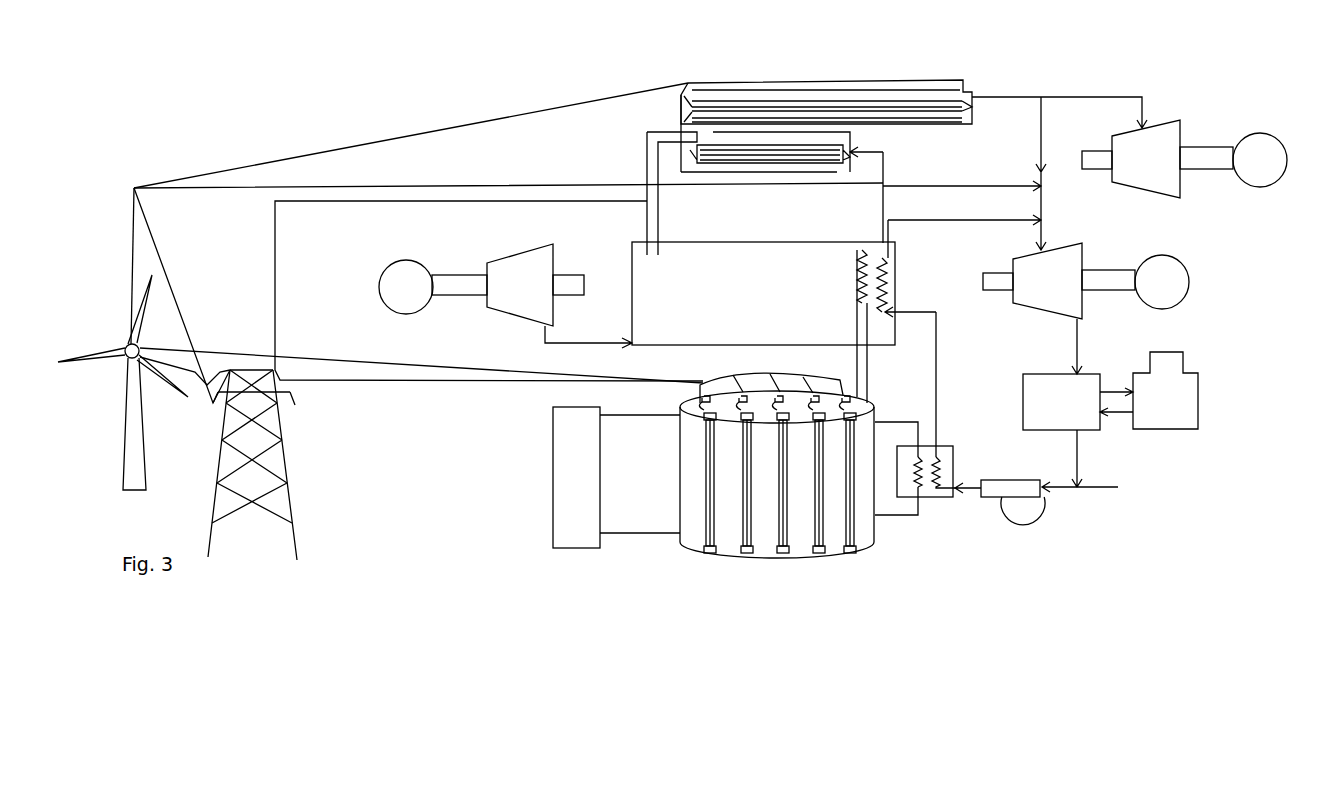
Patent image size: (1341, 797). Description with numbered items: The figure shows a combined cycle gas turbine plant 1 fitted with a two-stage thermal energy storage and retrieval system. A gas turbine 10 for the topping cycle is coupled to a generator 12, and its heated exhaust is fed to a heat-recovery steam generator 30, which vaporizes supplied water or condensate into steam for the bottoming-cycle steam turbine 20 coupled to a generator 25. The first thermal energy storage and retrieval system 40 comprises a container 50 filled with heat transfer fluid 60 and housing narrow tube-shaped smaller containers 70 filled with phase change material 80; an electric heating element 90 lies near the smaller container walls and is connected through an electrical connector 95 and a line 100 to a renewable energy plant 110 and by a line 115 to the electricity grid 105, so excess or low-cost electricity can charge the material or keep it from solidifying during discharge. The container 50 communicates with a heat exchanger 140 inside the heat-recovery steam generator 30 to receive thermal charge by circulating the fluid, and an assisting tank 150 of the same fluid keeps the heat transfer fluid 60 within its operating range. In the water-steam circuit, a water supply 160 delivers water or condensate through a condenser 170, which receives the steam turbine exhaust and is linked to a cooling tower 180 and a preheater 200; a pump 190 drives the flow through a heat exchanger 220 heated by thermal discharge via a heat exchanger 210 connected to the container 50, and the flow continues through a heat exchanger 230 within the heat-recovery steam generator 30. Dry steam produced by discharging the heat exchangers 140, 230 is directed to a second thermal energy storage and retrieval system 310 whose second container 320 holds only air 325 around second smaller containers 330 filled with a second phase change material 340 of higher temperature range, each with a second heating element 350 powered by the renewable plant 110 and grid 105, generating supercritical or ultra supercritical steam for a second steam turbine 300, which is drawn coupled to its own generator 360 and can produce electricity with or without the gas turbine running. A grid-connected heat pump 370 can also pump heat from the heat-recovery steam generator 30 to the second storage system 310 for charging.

The combined cycle gas turbine plant 1 is at (545, 70).
The gas turbine 10 is at (525, 250).
The generator 12 is at (400, 260).
The steam turbine 20 is at (1080, 243).
The generator 25 is at (1183, 258).
The heat-recovery steam generator 30 is at (698, 242).
The thermal energy storage and retrieval system 40 is at (723, 372).
The container 50 is at (678, 425).
The heat transfer fluid 60 is at (690, 447).
The smaller container 70 is at (700, 455).
The phase change material 80 is at (706, 470).
The electric heating element 90 is at (708, 522).
The electrical connector 95 is at (695, 394).
The line 100 is at (480, 365).
The electricity grid 105 is at (283, 400).
The renewable energy plant 110 is at (122, 375).
The line 115 is at (470, 383).
The heat exchanger 140 is at (862, 248).
The assisting tank 150 is at (553, 475).
The water supply 160 is at (1105, 487).
The condenser 170 is at (1037, 374).
The cooling tower 180 is at (1175, 352).
The pump 190 is at (990, 480).
The preheater 200 is at (938, 497).
The heat exchanger 210 is at (913, 458).
The heat exchanger 220 is at (945, 457).
The heat exchanger 230 is at (892, 280).
The second steam turbine 300 is at (1175, 120).
The second thermal energy storage and retrieval system 310 is at (833, 76).
The second container 320 is at (680, 100).
The air 325 is at (685, 122).
The second smaller container 330 is at (953, 122).
The second phase change material 340 is at (915, 117).
The second heating element 350 is at (887, 113).
The generator 360 is at (1282, 142).
The heat pump 370 is at (647, 158).